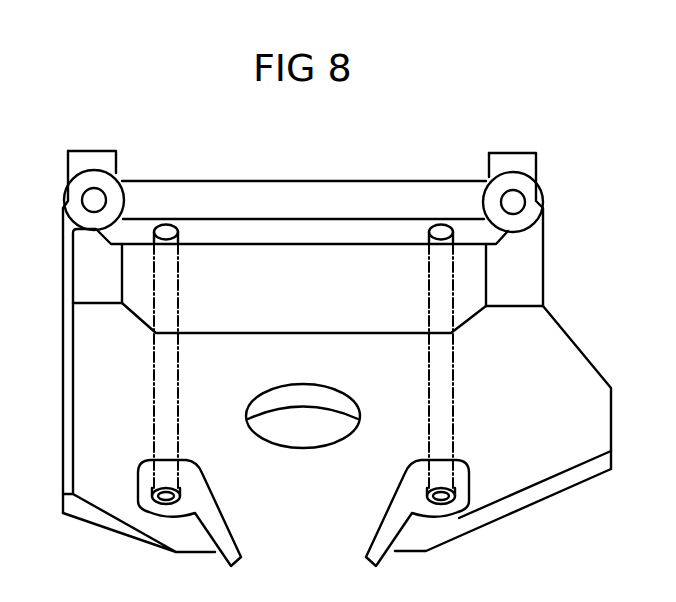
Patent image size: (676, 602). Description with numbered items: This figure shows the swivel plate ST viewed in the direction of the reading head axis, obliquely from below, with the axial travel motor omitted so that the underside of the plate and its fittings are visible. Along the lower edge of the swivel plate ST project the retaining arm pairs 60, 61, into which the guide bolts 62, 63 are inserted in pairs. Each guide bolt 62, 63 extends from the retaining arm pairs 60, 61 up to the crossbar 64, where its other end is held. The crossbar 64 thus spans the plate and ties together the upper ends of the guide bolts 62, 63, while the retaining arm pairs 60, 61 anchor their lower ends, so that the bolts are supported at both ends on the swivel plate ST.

The retaining arm pair 60 is at (151, 503).
The retaining arm pair 61 is at (112, 197).
The guide bolt 62 is at (160, 443).
The guide bolt 63 is at (91, 199).
The crossbar 64 is at (268, 198).
The swivel plate ST is at (537, 358).